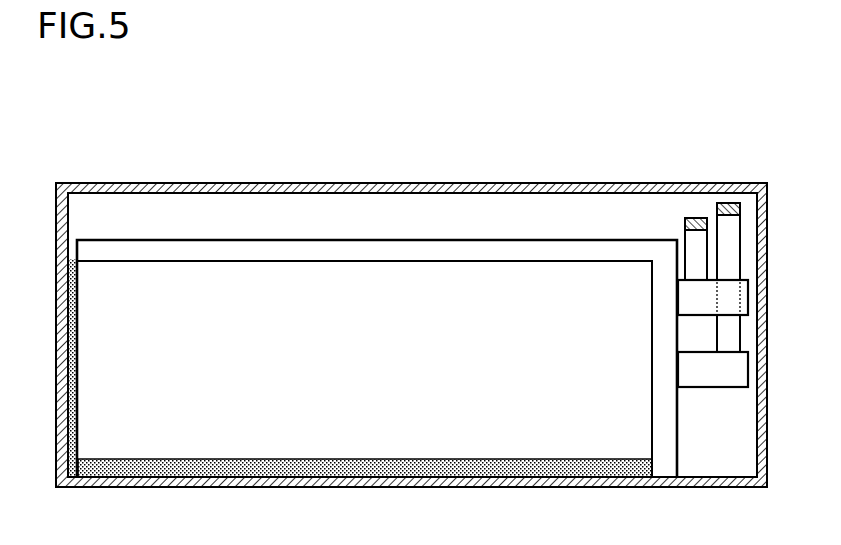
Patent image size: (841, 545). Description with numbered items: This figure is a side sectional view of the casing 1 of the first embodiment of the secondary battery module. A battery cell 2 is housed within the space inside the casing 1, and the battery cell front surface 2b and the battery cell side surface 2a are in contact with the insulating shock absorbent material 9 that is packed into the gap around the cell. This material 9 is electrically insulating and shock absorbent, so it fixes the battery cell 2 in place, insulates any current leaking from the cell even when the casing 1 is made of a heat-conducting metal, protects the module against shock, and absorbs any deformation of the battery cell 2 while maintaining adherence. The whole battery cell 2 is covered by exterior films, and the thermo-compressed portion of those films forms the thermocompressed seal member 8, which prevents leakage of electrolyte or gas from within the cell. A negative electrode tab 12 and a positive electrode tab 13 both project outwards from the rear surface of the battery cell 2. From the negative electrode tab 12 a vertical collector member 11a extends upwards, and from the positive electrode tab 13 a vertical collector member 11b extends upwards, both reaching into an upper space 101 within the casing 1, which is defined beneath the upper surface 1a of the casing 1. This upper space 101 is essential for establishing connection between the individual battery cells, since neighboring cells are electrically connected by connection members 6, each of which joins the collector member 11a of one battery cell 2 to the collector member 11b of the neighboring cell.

The casing 1 is at (60, 183).
The upper surface of the casing 1a is at (172, 183).
The upper space 101 is at (503, 215).
The battery cell 2 is at (247, 240).
The battery cell side surface 2a is at (108, 357).
The battery cell front surface 2b is at (70, 305).
The thermocompressed seal member 8 is at (374, 255).
The insulating shock absorbent material 9 is at (70, 412).
The connection member 6 is at (726, 205).
The vertical collector member 11a is at (681, 232).
The vertical collector member 11b is at (735, 340).
The negative electrode tab 12 is at (686, 300).
The positive electrode tab 13 is at (686, 370).